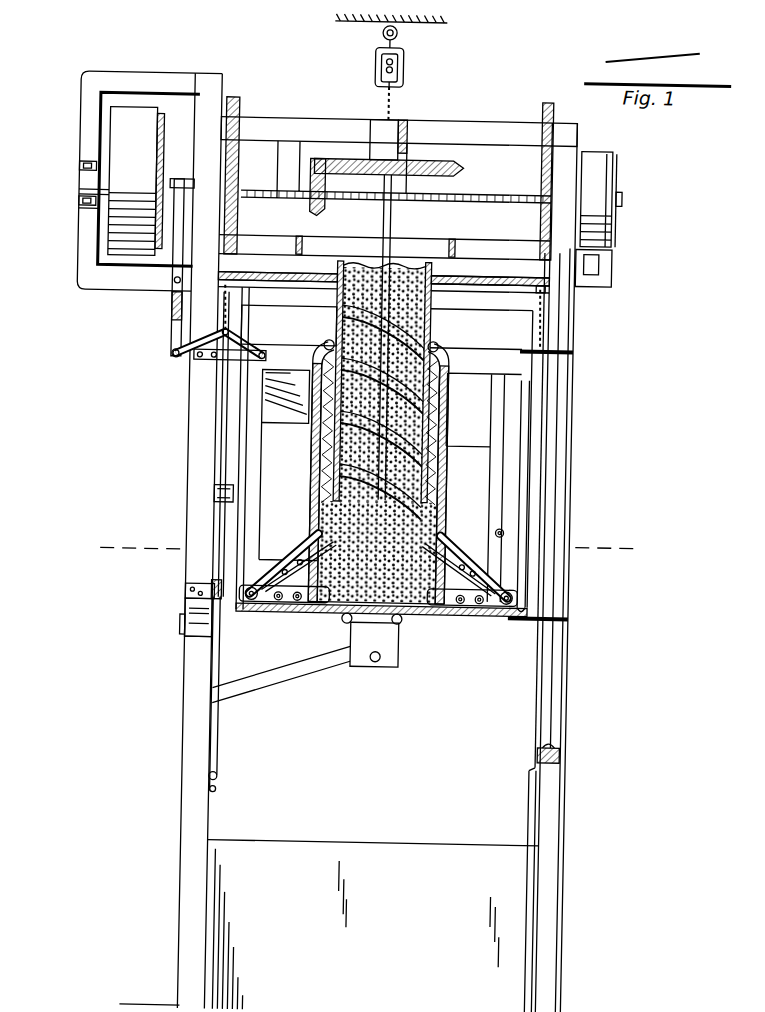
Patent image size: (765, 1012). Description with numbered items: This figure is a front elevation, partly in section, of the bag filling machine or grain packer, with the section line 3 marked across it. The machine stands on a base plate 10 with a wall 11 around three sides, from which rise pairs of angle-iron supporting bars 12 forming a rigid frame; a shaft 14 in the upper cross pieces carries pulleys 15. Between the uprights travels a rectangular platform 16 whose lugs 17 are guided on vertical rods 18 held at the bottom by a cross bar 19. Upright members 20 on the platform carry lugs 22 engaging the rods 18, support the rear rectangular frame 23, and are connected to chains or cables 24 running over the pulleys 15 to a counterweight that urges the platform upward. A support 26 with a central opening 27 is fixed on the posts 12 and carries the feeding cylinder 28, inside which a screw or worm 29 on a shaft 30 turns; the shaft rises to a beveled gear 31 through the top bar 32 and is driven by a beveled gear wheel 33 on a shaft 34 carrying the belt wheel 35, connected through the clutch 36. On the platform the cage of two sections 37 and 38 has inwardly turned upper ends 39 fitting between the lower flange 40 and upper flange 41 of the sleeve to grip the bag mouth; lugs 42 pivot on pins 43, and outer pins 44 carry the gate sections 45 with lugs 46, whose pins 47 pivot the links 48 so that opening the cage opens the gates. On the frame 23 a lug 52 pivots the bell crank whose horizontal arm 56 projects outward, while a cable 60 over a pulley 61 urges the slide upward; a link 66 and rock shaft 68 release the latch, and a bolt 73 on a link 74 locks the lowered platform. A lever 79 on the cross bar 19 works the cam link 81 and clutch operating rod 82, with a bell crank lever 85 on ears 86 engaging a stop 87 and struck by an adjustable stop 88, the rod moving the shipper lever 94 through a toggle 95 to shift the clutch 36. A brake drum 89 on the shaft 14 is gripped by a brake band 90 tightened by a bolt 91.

The base plate 10 is at (150, 1009).
The wall 11 is at (384, 843).
The supporting bars 12 is at (197, 854).
The shaft 14 is at (487, 203).
The pulleys 15 is at (233, 112).
The platform 16 is at (512, 642).
The lugs 17 is at (570, 616).
The vertical rods 18 is at (558, 678).
The cross bar 19 is at (540, 766).
The upright members 20 is at (541, 446).
The lugs 22 is at (572, 349).
The rectangular frame 23 is at (246, 460).
The chains or cables 24 is at (542, 324).
The support 26 is at (281, 292).
The central opening 27 is at (430, 272).
The feeding cylinder 28 is at (330, 276).
The screw or worm 29 is at (405, 304).
The shaft 30 is at (386, 217).
The beveled gear 31 is at (457, 168).
The top bar 32 is at (450, 128).
The beveled gear wheel 33 is at (318, 207).
The shaft 34 is at (272, 197).
The belt wheel 35 is at (118, 141).
The clutch 36 is at (191, 96).
The cage section 37 is at (446, 478).
The cage section 38 is at (312, 494).
The inwardly turned upper end 39 is at (446, 362).
The lower flange or shoulder 40 is at (444, 396).
The upper flange or shoulder 41 is at (436, 345).
The lugs 42 is at (310, 570).
The pivot pins 43 is at (300, 612).
The pivot pins 44 is at (256, 632).
The gate sections 45 is at (337, 621).
The lugs 46 is at (474, 630).
The pins 47 is at (255, 578).
The links 48 is at (470, 560).
The lug 52 is at (392, 670).
The horizontal arm 56 is at (283, 690).
The cable 60 is at (374, 108).
The pulley 61 is at (396, 60).
The link 66 is at (468, 447).
The shaft 68 is at (503, 530).
The bolt 73 is at (294, 432).
The link 74 is at (300, 380).
The lever 79 is at (222, 793).
The cam link 81 is at (223, 747).
The clutch operating rod 82 is at (218, 415).
The bell crank lever 85 is at (205, 662).
The ears 86 is at (185, 642).
The stop 87 is at (186, 592).
The stop 88 is at (212, 490).
The brake drum 89 is at (613, 172).
The brake band 90 is at (593, 152).
The bolt 91 is at (598, 258).
The shipper lever 94 is at (166, 306).
The toggle 95 is at (168, 356).
The section line 3- 3 is at (369, 548).